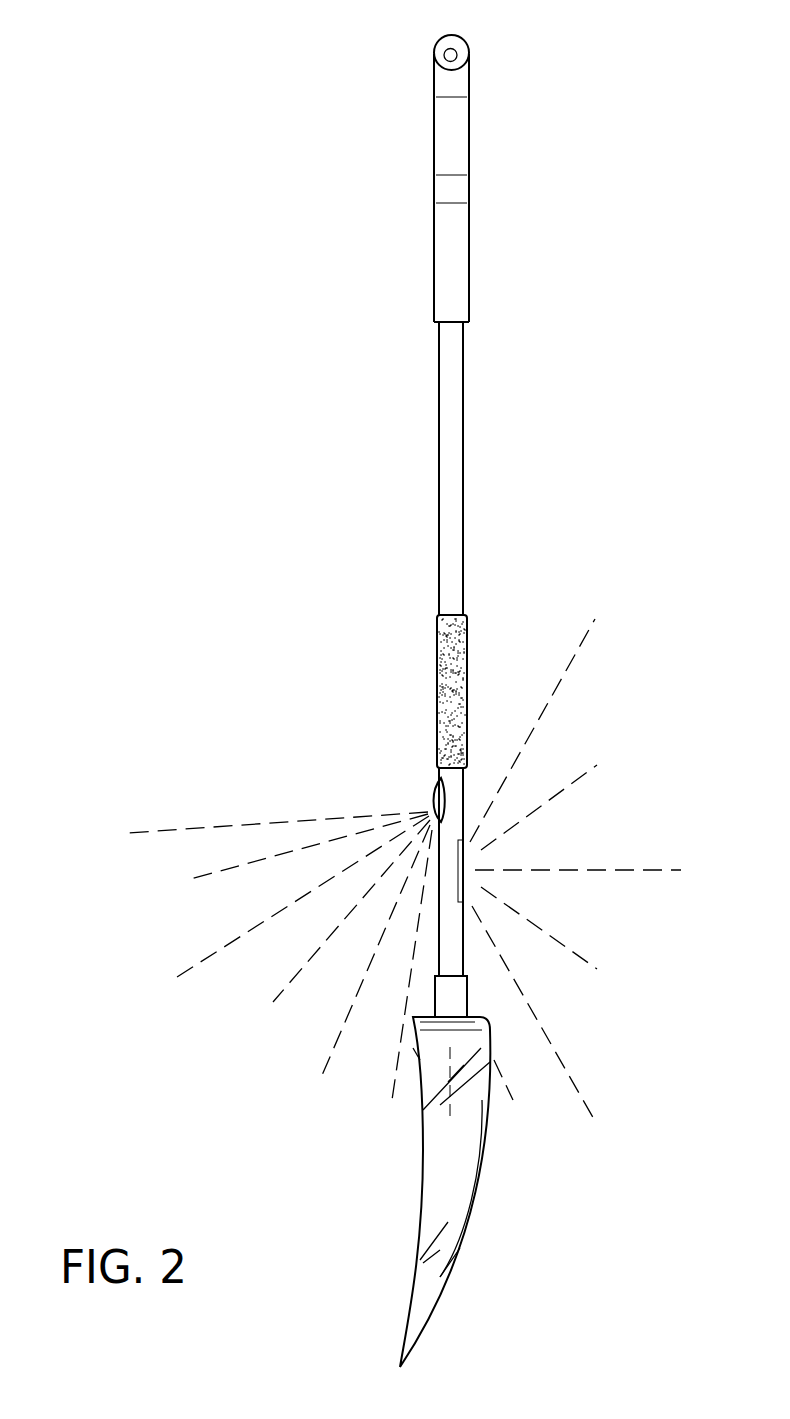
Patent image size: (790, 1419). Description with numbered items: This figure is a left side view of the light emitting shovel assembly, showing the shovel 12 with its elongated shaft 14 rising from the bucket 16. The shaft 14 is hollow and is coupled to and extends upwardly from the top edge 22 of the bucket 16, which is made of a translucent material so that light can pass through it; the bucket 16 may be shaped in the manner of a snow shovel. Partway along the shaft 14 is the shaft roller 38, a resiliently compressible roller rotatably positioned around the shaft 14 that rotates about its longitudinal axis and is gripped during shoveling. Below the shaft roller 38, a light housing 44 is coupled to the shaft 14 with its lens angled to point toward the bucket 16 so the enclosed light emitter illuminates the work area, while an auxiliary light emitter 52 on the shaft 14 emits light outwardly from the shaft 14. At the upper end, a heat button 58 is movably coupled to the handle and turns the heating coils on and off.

The shovel 12 is at (374, 515).
The shaft 14 is at (463, 508).
The bucket 16 is at (488, 1015).
The top edge 22 is at (450, 1017).
The shaft roller 38 is at (437, 680).
The light housing 44 is at (430, 800).
The auxiliary light emitter 52 is at (464, 845).
The heat button 58 is at (455, 51).